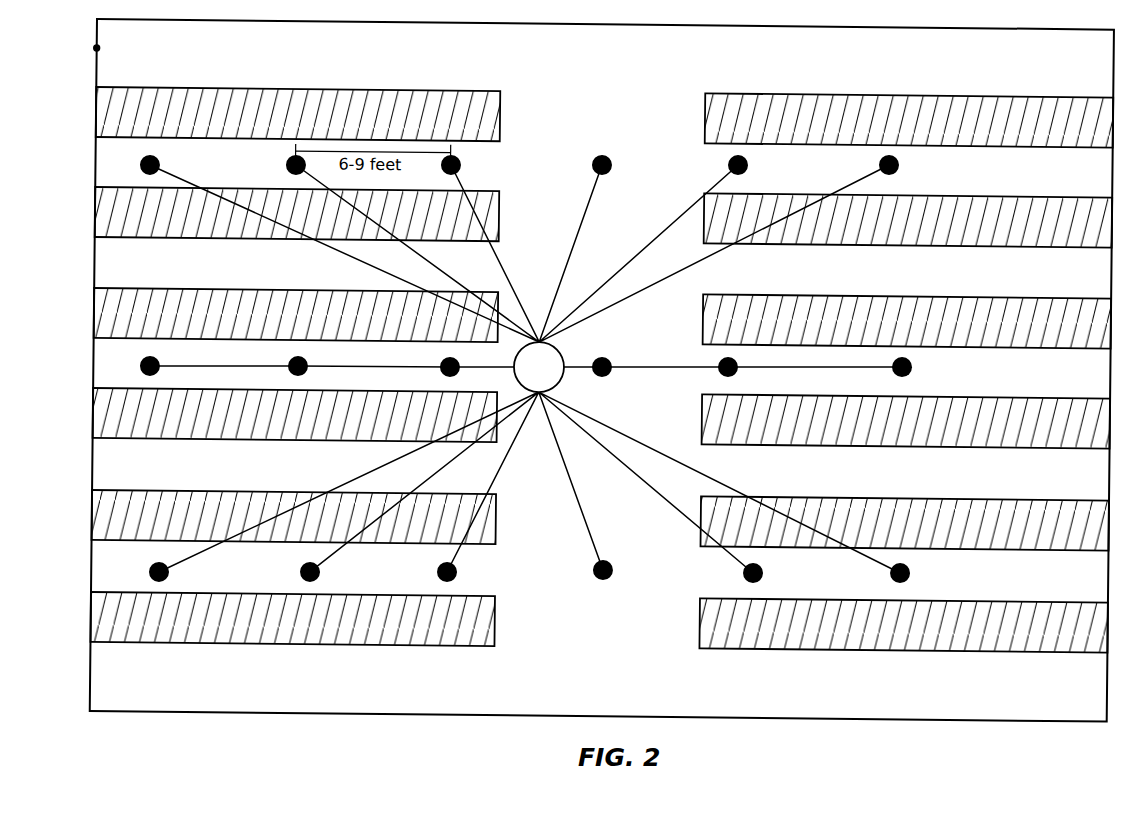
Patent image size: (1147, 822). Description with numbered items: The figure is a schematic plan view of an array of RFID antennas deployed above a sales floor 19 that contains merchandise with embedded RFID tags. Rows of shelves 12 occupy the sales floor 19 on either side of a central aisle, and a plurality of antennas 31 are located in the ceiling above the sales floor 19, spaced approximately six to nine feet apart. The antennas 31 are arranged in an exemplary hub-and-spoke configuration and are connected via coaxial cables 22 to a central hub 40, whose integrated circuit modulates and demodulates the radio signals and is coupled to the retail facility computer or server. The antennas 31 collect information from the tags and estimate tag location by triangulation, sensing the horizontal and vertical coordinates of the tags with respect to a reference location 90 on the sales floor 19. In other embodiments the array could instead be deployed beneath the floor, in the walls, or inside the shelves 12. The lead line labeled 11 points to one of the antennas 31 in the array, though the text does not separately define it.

The reference location 90 is at (588, 370).
The shelves 12 is at (120, 113).
The lighting fixture sensor 11 is at (896, 149).
The antennas 31 is at (143, 561).
The central hub 40 is at (539, 367).
The coaxial cables 22 is at (517, 438).
The sales floor 19 is at (496, 696).